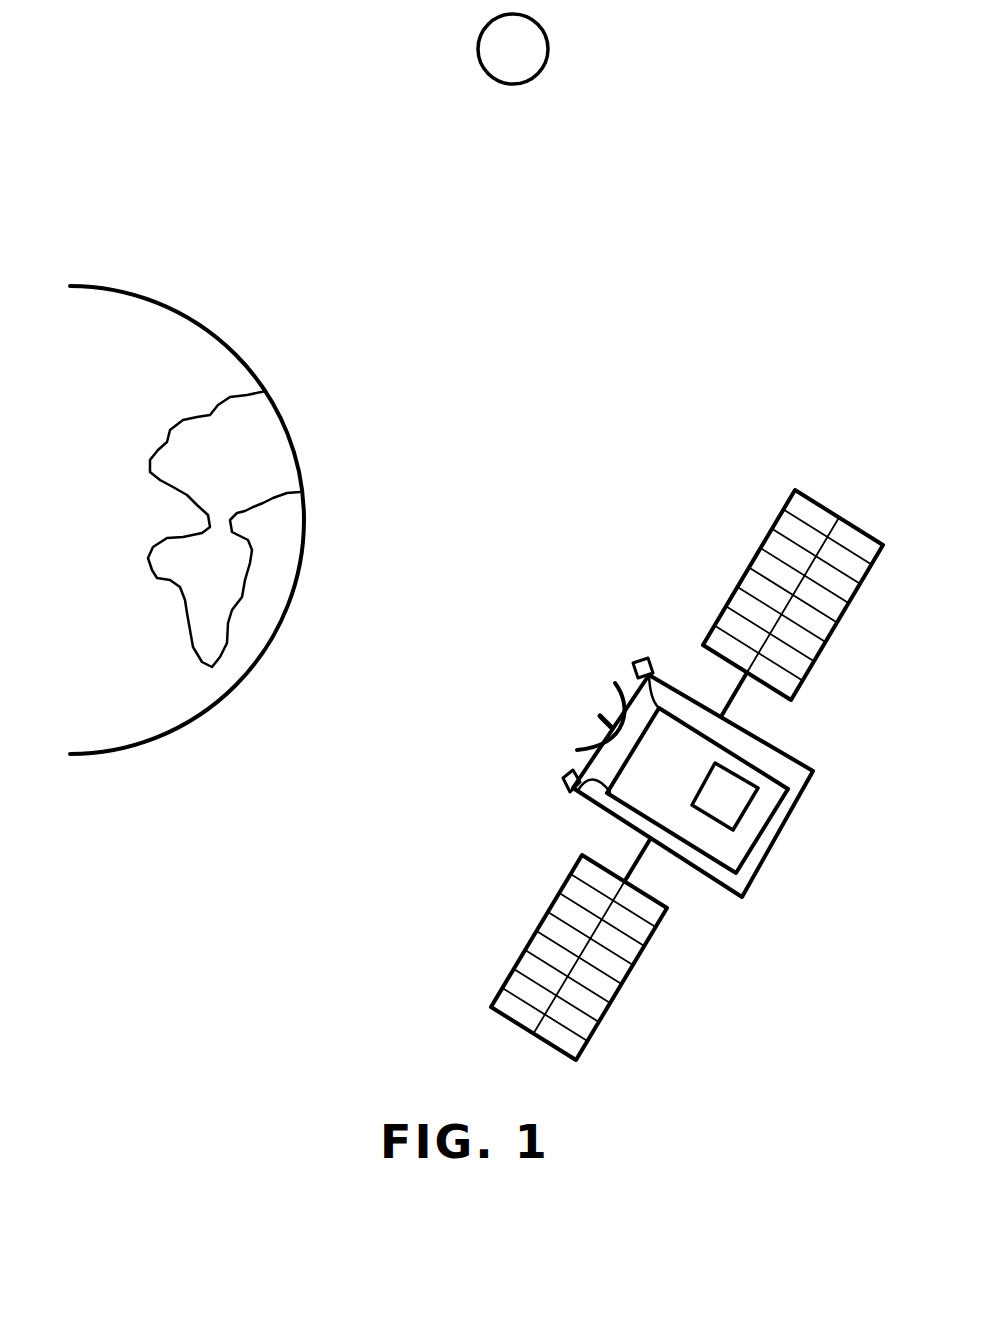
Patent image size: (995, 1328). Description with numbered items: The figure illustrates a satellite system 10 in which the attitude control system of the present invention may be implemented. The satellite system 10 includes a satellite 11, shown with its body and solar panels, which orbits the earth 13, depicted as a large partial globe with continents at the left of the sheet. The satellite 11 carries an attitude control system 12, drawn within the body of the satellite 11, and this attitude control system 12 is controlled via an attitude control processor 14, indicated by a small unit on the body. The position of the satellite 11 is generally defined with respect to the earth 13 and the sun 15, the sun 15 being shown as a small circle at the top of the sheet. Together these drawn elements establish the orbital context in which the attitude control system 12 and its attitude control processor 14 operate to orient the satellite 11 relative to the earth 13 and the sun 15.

The satellite system 10 is at (377, 897).
The satellite 11 is at (824, 776).
The attitude control system 12 is at (707, 858).
The earth 13 is at (193, 320).
The attitude control processor 14 is at (738, 823).
The sun 15 is at (547, 57).